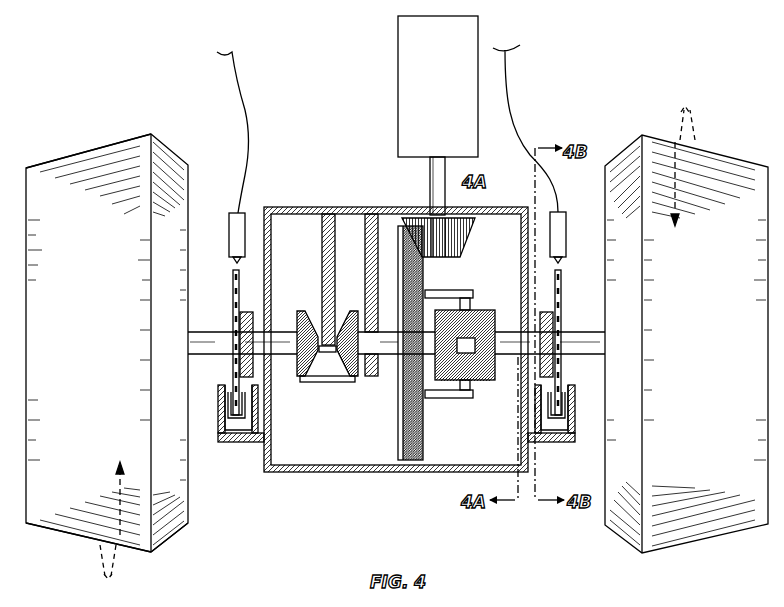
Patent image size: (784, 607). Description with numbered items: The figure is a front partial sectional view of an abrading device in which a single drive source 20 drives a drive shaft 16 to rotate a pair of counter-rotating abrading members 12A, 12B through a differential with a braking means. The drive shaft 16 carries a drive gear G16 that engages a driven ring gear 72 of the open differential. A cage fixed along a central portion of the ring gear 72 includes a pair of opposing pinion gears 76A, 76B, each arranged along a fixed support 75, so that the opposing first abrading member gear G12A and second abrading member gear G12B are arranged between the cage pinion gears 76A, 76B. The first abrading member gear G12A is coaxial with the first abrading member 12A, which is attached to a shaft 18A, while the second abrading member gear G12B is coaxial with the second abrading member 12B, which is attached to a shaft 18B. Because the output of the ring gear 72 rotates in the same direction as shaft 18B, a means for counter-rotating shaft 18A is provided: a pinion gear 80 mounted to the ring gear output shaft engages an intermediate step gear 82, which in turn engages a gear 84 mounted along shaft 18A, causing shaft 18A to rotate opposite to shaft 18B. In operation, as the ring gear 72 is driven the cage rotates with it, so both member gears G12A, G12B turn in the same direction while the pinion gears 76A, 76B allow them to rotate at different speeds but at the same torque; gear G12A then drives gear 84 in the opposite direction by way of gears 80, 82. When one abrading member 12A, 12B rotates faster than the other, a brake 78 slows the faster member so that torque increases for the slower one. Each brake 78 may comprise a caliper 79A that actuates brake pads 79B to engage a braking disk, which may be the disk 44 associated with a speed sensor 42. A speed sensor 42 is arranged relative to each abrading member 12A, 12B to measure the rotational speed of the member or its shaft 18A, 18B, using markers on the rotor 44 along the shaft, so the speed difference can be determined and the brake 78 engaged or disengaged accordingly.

The first abrading member 12A is at (67, 152).
The second abrading member 12B is at (725, 152).
The drive source 20 is at (408, 60).
The drive shaft 16 is at (432, 190).
The drive gear G16 is at (418, 216).
The speed sensor 42 is at (229, 222).
The rotor 44 is at (233, 280).
The shaft 18A is at (214, 332).
The shaft 18B is at (585, 332).
The gear 84 is at (300, 312).
The pinion gear 80 is at (350, 312).
The intermediate step gear 82 is at (315, 384).
The driven ring gear 72 is at (397, 428).
The fixed support 75 is at (428, 297).
The pinion gear 76A is at (475, 310).
The pinion gear 76B is at (470, 385).
The first abrading member gear G12A is at (398, 400).
The second abrading member gear G12B is at (505, 382).
The brake 78 is at (218, 426).
The caliper 79A is at (230, 428).
The brake pads 79B is at (230, 405).